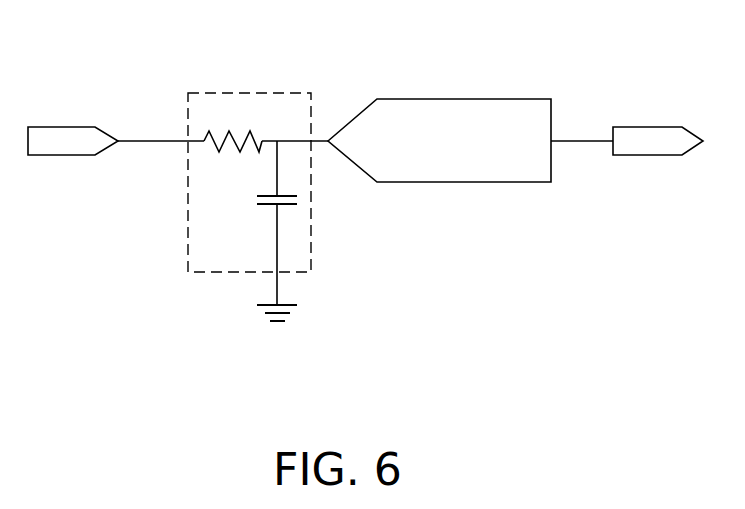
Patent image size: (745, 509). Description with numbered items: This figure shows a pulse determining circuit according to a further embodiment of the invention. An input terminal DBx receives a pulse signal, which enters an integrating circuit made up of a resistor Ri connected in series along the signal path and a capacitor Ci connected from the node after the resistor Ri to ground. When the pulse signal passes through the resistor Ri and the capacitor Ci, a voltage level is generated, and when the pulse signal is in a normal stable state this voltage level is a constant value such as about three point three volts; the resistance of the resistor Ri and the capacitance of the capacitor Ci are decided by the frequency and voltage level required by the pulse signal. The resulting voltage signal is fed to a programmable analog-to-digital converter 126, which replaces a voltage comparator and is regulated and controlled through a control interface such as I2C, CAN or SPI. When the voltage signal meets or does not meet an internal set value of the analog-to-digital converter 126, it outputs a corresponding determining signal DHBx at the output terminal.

The programmable analog-to-digital converter 126 is at (450, 99).
The resistor Ri is at (233, 163).
The capacitor Ci is at (280, 223).
The input signal terminal DBx is at (73, 123).
The determining signal DHBx is at (658, 123).